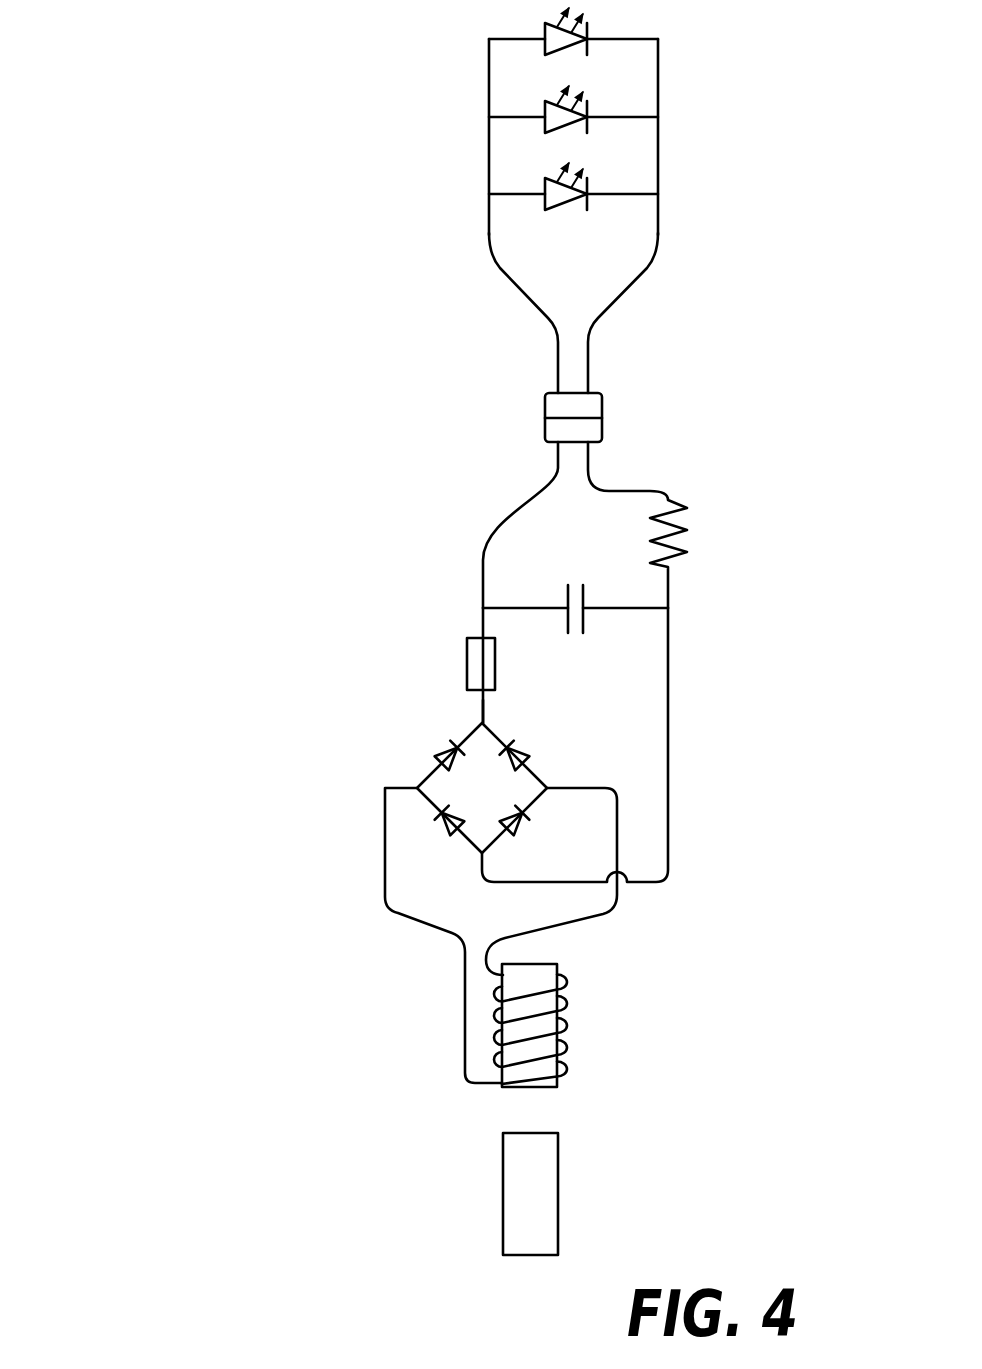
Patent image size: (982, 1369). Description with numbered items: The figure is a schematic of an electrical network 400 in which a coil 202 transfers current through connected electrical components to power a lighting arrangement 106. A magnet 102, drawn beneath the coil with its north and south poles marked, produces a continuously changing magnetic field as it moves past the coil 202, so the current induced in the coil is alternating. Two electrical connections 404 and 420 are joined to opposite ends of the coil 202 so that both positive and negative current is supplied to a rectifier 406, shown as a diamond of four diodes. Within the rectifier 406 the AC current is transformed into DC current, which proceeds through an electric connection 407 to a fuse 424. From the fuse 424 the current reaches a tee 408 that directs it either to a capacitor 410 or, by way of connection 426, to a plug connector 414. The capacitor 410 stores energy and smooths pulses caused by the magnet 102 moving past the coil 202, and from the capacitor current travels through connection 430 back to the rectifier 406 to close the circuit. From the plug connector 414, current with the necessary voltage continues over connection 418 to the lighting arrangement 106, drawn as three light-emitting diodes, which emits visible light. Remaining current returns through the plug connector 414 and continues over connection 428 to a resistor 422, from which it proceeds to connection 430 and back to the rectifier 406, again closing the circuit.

The electrical network 400 is at (178, 488).
The lighting arrangement 106 is at (466, 113).
The connection 418 is at (489, 233).
The connection 428 is at (643, 272).
The plug connector 414 is at (553, 422).
The connection 426 is at (548, 483).
The resistor 422 is at (680, 527).
The tee 408 is at (483, 608).
The capacitor 410 is at (568, 593).
The fuse 424 is at (467, 667).
The electric connection 407 is at (483, 711).
The rectifier 406 is at (430, 770).
The connection 430 is at (669, 686).
The electrical connection 404 is at (385, 871).
The electrical connection 420 is at (597, 917).
The coil 202 is at (543, 1005).
The magnet 102 is at (502, 1170).